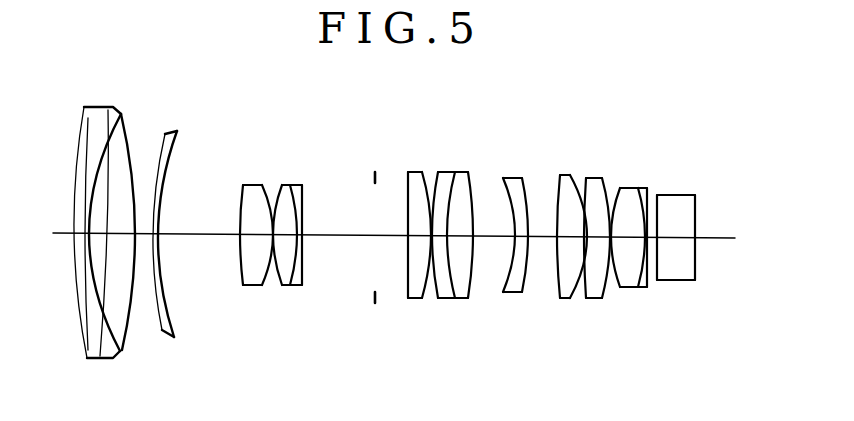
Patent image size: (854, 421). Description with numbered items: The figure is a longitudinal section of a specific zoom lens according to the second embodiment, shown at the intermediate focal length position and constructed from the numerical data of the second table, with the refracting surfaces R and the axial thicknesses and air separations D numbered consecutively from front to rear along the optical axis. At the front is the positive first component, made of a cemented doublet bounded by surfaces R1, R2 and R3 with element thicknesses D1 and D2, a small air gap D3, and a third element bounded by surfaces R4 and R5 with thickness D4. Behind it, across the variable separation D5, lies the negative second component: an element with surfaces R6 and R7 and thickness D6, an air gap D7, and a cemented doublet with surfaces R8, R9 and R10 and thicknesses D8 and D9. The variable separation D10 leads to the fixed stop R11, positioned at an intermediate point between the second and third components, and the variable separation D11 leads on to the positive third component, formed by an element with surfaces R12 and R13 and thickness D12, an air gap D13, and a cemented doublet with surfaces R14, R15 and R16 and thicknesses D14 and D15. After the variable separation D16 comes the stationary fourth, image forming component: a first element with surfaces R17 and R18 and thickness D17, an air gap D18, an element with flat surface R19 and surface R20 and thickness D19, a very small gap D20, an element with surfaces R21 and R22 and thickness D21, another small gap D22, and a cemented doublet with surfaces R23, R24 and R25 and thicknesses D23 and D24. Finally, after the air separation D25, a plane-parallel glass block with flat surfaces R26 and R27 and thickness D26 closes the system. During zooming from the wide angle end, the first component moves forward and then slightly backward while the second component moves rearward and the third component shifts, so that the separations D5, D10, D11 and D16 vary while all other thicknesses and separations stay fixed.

The first lens surface radius of curvature R1 is at (79, 120).
The second lens surface radius of curvature R2 is at (104, 123).
The third lens surface radius of curvature R3 is at (124, 118).
The fourth lens surface radius of curvature R4 is at (164, 133).
The fifth lens surface radius of curvature R5 is at (177, 130).
The sixth lens surface radius of curvature R6 is at (240, 197).
The seventh lens surface radius of curvature R7 is at (252, 184).
The eighth lens surface radius of curvature R8 is at (268, 184).
The ninth lens surface radius of curvature R9 is at (292, 184).
The tenth lens surface radius of curvature R10 is at (303, 198).
The fixed stop R11 is at (375, 172).
The twelfth lens surface radius of curvature R12 is at (407, 174).
The thirteenth lens surface radius of curvature R13 is at (421, 173).
The fourteenth lens surface radius of curvature R14 is at (438, 173).
The fifteenth lens surface radius of curvature R15 is at (455, 173).
The sixteenth lens surface radius of curvature R16 is at (468, 172).
The seventeenth lens surface radius of curvature R17 is at (503, 179).
The eighteenth lens surface radius of curvature R18 is at (522, 178).
The nineteenth lens surface radius of curvature R19 is at (560, 176).
The twentieth lens surface radius of curvature R20 is at (570, 177).
The twenty-first lens surface radius of curvature R21 is at (586, 179).
The twenty-second lens surface radius of curvature R22 is at (602, 178).
The twenty-third lens surface radius of curvature R23 is at (620, 188).
The twenty-fourth lens surface radius of curvature R24 is at (636, 188).
The twenty-fifth lens surface radius of curvature R25 is at (647, 190).
The twenty-sixth surface radius of curvature R26 is at (660, 205).
The twenty-seventh surface radius of curvature R27 is at (697, 213).
The first axial thickness D1 is at (77, 310).
The second axial thickness D2 is at (103, 318).
The third air separation D3 is at (127, 340).
The fourth axial thickness D4 is at (163, 292).
The fifth air separation D5 is at (196, 238).
The sixth axial thickness D6 is at (238, 250).
The seventh air separation D7 is at (252, 286).
The eighth axial thickness D8 is at (278, 286).
The ninth axial thickness D9 is at (298, 286).
The tenth air separation D10 is at (333, 240).
The eleventh air separation D11 is at (398, 240).
The twelfth axial thickness D12 is at (406, 298).
The thirteenth air separation D13 is at (428, 298).
The fourteenth axial thickness D14 is at (447, 300).
The fifteenth axial thickness D15 is at (466, 300).
The sixteenth air separation D16 is at (492, 238).
The seventeenth axial thickness D17 is at (507, 294).
The eighteenth air separation D18 is at (545, 240).
The nineteenth axial thickness D19 is at (561, 300).
The twentieth air separation D20 is at (576, 300).
The twenty-first axial thickness D21 is at (593, 300).
The twenty-second air separation D22 is at (608, 294).
The twenty-third axial thickness D23 is at (633, 282).
The twenty-fourth axial thickness D24 is at (645, 270).
The twenty-fifth air separation D25 is at (652, 278).
The twenty-sixth axial thickness D26 is at (692, 270).